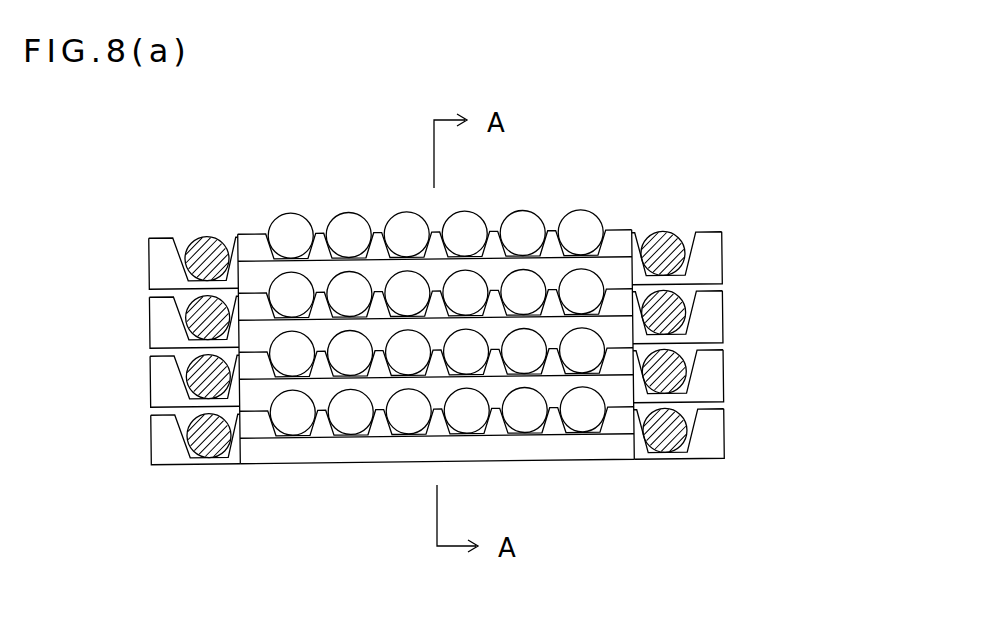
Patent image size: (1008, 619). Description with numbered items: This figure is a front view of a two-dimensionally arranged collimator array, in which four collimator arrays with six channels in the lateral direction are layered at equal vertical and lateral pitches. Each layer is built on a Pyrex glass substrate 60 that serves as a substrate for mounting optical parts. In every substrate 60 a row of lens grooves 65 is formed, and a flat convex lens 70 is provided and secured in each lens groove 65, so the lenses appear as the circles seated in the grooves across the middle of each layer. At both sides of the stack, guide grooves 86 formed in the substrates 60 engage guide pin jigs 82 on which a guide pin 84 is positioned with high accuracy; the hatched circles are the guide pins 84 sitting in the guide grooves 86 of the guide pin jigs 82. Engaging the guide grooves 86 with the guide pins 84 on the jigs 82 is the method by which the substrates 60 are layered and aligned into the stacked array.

The substrate 60 is at (447, 398).
The lens groove 65 is at (576, 428).
The flat convex lens 70 is at (529, 218).
The guide pin jig 82 is at (175, 448).
The guide pin 84 is at (225, 235).
The guide groove 86 is at (657, 270).